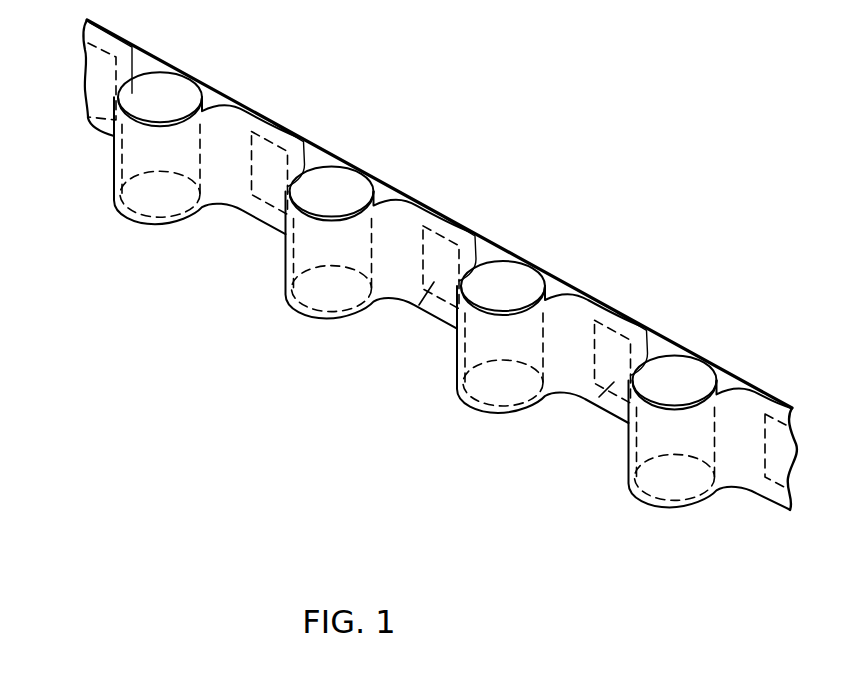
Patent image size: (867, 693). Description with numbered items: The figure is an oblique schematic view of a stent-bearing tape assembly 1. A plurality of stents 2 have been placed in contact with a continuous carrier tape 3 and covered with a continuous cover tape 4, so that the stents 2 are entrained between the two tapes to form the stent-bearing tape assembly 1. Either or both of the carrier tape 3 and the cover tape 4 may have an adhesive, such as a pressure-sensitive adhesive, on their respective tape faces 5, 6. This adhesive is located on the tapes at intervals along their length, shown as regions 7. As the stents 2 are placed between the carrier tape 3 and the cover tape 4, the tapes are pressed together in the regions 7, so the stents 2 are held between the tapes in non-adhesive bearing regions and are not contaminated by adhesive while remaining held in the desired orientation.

The stent-bearing tape assembly 1 is at (415, 158).
The stents 2 is at (343, 178).
The carrier tape 3 is at (510, 257).
The cover tape 4 is at (213, 220).
The tape face 5 is at (553, 290).
The tape face 6 is at (728, 389).
The regions 7 is at (600, 392).